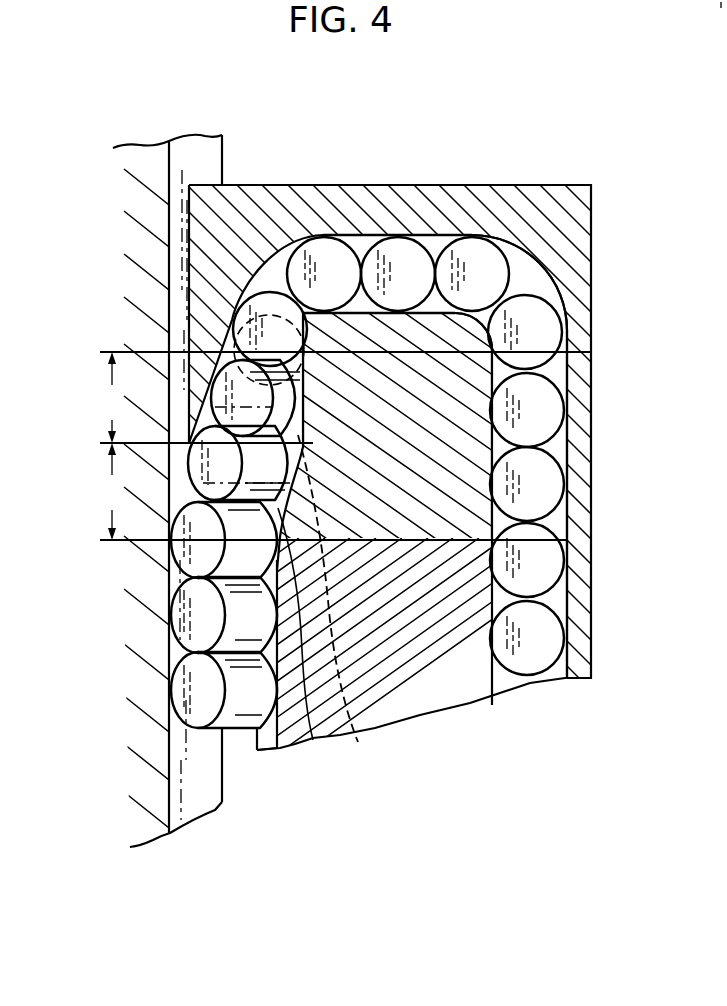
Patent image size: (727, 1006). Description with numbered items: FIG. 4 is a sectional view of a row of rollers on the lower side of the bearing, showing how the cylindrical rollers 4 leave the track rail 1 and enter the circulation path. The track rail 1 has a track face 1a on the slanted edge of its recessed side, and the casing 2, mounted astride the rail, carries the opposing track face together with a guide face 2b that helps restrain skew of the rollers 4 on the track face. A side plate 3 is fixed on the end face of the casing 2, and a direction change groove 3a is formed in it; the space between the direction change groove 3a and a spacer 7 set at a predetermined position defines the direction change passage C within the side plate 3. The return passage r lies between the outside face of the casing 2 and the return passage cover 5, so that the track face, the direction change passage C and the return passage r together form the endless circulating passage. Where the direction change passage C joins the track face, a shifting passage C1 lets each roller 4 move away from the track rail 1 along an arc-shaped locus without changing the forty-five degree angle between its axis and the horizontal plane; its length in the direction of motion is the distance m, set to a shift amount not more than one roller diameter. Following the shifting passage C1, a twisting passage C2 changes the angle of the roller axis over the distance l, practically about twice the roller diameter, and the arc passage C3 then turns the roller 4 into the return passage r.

The track rail 1 is at (195, 488).
The track face 1a is at (202, 162).
The casing 2 is at (403, 690).
The guide face 2b is at (263, 738).
The side plate 3 is at (316, 453).
The direction change groove 3a is at (442, 235).
The cylindrical roller 4 is at (335, 262).
The return passage cover 5 is at (572, 640).
The spacer 7 is at (470, 448).
The direction change passage C is at (525, 277).
The shifting passage C1 is at (307, 634).
The twisting passage C2 is at (337, 604).
The arc passage C3 is at (300, 290).
The return passage r is at (553, 600).
The twisting distance l is at (111, 397).
The shifting length m is at (112, 491).